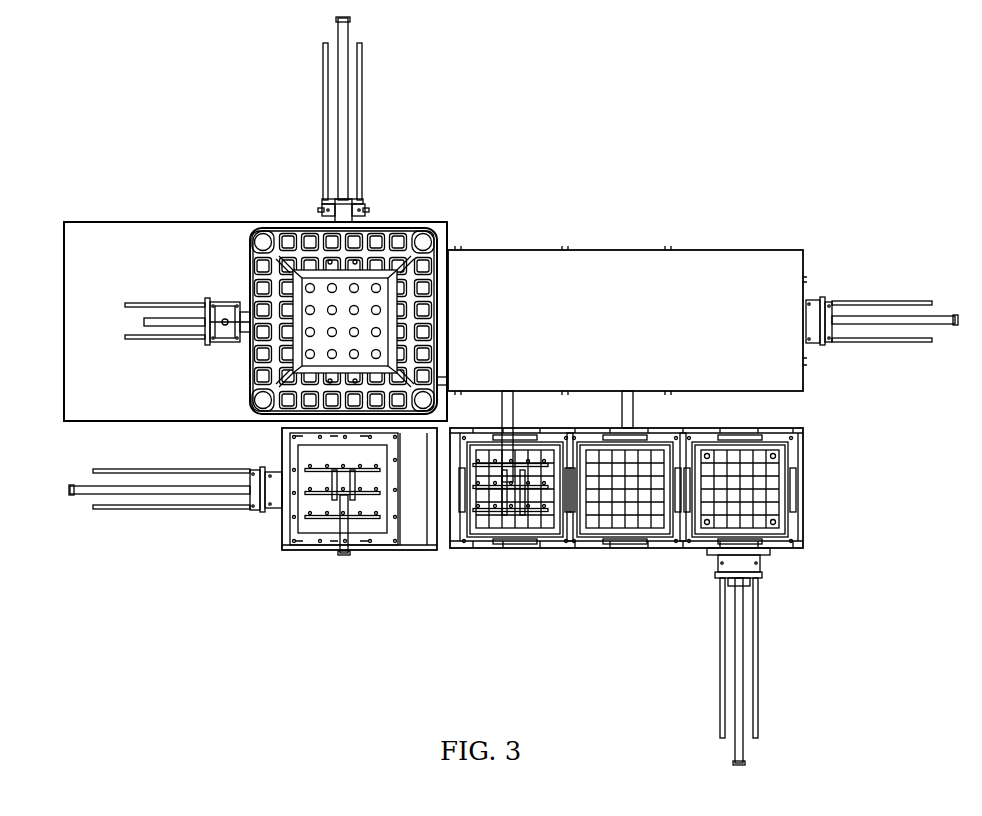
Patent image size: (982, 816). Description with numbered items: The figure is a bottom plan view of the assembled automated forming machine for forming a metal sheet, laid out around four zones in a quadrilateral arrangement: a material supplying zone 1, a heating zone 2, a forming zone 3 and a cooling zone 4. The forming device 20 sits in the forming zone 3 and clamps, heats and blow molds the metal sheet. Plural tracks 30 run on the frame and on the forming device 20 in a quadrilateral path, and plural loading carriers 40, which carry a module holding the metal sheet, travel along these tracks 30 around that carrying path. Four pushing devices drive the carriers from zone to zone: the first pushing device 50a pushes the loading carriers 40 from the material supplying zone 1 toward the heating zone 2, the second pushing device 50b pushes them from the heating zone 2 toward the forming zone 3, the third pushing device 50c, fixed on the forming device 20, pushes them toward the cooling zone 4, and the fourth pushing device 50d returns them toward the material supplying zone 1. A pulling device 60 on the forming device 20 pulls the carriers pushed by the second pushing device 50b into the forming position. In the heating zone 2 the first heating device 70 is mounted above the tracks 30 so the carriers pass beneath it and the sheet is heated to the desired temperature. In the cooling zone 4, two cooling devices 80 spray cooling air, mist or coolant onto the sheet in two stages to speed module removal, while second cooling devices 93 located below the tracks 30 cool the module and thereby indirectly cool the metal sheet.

The material supplying zone 1 is at (665, 590).
The heating zone 2 is at (783, 197).
The forming zone 3 is at (242, 197).
The cooling zone 4 is at (432, 595).
The forming device 20 is at (250, 263).
The tracks 30 is at (795, 418).
The loading carriers 40 is at (612, 545).
The first pushing device 50a is at (762, 572).
The second pushing device 50b is at (823, 298).
The third pushing device 50c is at (363, 208).
The fourth pushing device 50d is at (262, 470).
The pulling device 60 is at (214, 336).
The first heating device 70 is at (716, 258).
The cooling device 80 is at (338, 556).
The second cooling devices 93 is at (298, 563).